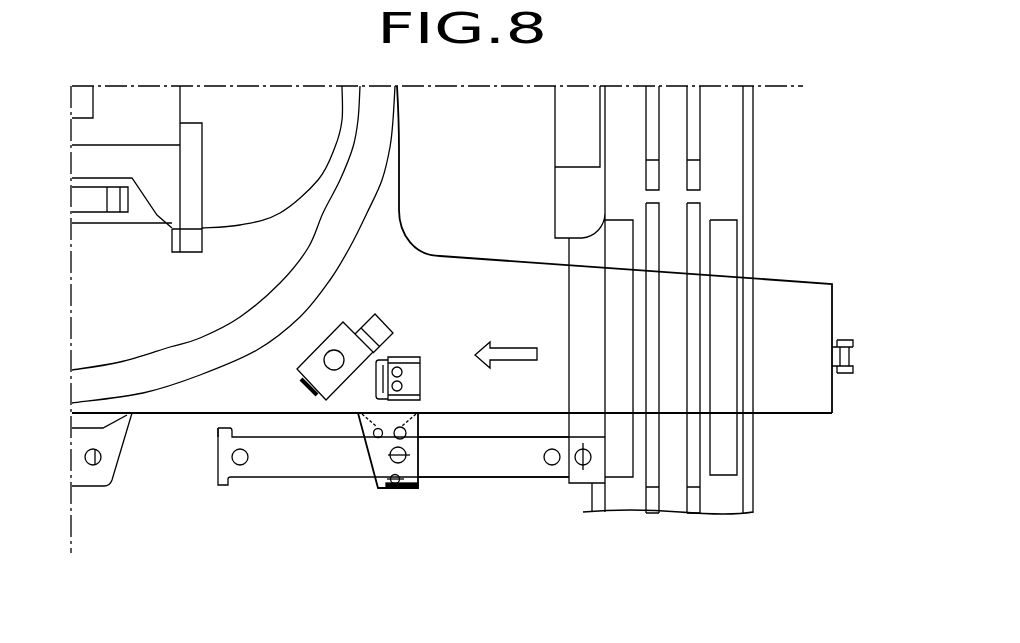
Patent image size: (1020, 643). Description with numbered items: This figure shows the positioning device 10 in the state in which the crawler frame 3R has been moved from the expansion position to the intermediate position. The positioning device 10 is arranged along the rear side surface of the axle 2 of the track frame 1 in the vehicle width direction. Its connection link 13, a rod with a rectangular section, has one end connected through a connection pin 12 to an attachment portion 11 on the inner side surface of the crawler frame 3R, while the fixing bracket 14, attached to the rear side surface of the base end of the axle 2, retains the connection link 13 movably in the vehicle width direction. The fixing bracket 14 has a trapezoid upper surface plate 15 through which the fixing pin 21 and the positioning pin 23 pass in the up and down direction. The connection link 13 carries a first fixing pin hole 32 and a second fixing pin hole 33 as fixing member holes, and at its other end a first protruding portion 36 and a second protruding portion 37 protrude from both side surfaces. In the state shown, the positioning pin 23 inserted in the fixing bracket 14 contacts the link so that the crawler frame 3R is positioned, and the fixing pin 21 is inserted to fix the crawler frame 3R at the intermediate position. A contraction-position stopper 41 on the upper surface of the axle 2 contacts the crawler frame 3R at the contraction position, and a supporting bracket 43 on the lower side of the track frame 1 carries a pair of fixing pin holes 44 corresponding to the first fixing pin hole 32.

The track frame 1 is at (400, 167).
The axle 2 is at (512, 285).
The crawler frame 3R is at (725, 173).
The positioning device 10 is at (384, 498).
The attachment portion 11 is at (578, 480).
The connection pin 12 is at (588, 462).
The connection link 13 is at (502, 462).
The fixing bracket 14 is at (377, 489).
The upper surface plate 15 is at (365, 465).
The fixing pin 21 is at (407, 460).
The positioning pin 23 is at (374, 437).
The first fixing pin hole 32 is at (243, 465).
The second fixing pin hole 33 is at (551, 465).
The first protruding portion 36 is at (223, 485).
The second protruding portion 37 is at (218, 431).
The contraction-position stopper 41 is at (405, 362).
The supporting bracket 43 is at (93, 478).
The fixing pin holes 44 is at (97, 462).